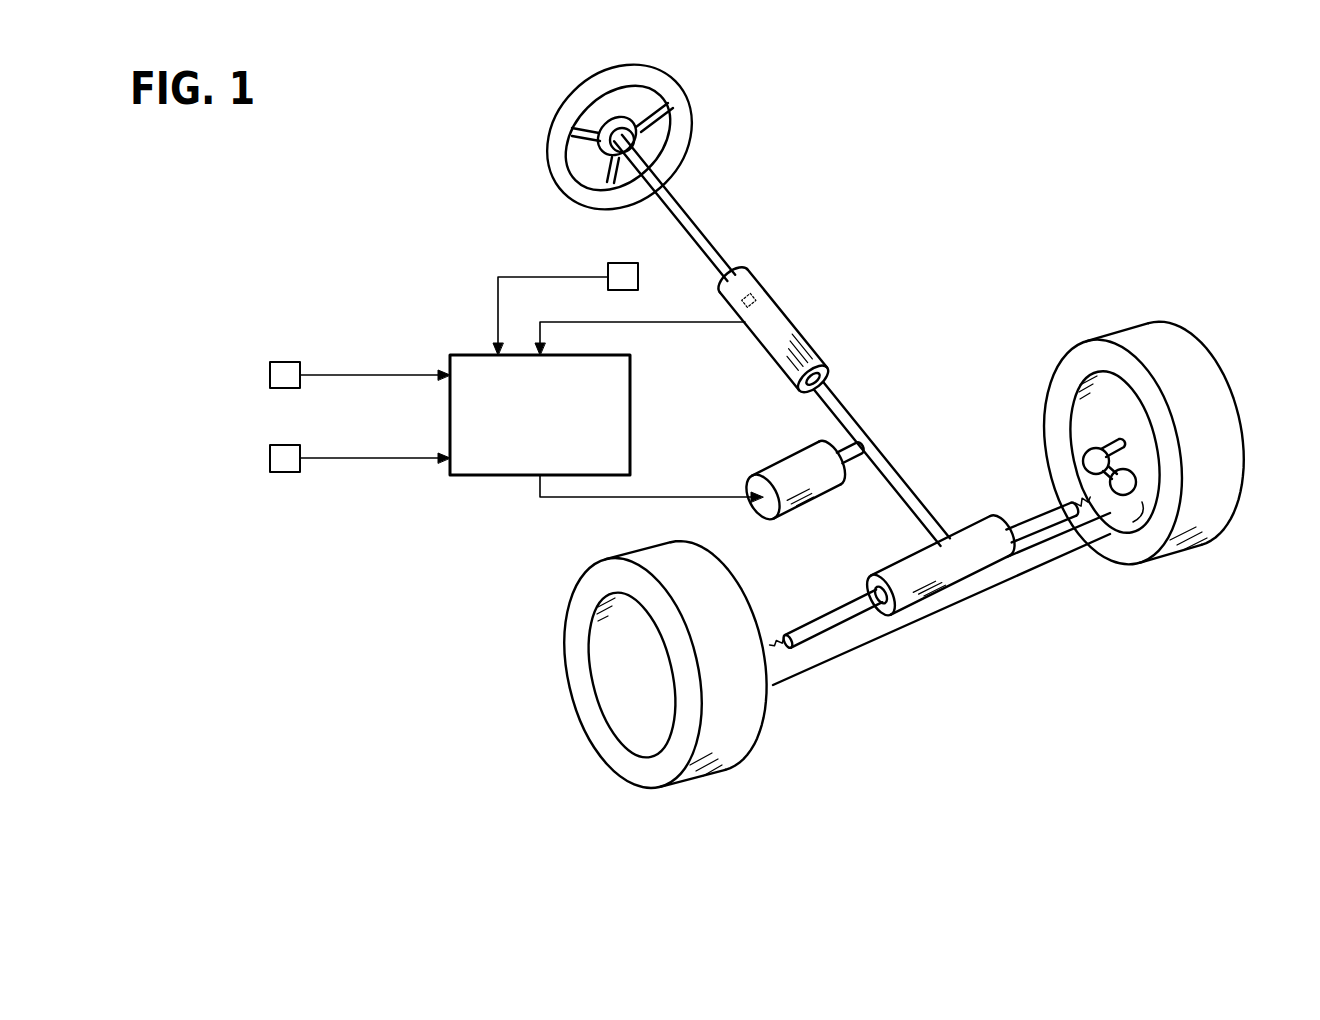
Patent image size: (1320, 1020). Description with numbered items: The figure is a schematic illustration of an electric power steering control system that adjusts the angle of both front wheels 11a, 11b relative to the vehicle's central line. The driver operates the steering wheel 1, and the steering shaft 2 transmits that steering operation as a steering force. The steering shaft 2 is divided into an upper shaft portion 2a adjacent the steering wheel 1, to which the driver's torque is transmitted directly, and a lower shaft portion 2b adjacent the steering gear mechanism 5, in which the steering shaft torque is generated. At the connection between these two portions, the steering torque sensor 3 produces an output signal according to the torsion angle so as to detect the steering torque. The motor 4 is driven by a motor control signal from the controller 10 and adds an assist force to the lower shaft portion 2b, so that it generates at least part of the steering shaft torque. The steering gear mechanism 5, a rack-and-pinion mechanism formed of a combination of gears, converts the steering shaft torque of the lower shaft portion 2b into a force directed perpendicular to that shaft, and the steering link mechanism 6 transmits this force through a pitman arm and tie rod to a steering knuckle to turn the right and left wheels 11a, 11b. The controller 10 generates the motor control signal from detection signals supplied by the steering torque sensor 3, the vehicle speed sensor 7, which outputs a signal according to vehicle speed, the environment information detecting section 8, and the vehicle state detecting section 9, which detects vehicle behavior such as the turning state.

The steering wheel 1 is at (690, 93).
The steering shaft 2 is at (782, 340).
The upper shaft portion 2a is at (712, 242).
The lower shaft portion 2b is at (842, 400).
The steering torque sensor 3 is at (768, 310).
The motor 4 is at (808, 497).
The steering gear mechanism 5 is at (990, 523).
The steering link mechanism 6 is at (960, 597).
The vehicle speed sensor 7 is at (638, 275).
The environment information detecting section 8 is at (285, 362).
The vehicle state detecting section 9 is at (285, 472).
The controller 10 is at (630, 412).
The front wheel 11a is at (713, 778).
The front wheel 11b is at (1193, 548).